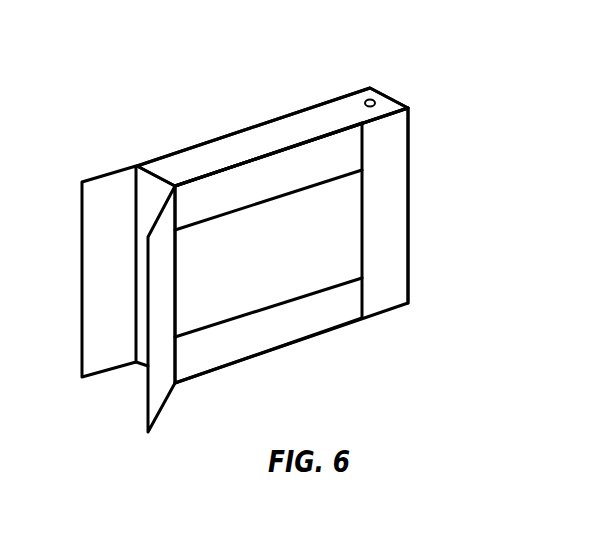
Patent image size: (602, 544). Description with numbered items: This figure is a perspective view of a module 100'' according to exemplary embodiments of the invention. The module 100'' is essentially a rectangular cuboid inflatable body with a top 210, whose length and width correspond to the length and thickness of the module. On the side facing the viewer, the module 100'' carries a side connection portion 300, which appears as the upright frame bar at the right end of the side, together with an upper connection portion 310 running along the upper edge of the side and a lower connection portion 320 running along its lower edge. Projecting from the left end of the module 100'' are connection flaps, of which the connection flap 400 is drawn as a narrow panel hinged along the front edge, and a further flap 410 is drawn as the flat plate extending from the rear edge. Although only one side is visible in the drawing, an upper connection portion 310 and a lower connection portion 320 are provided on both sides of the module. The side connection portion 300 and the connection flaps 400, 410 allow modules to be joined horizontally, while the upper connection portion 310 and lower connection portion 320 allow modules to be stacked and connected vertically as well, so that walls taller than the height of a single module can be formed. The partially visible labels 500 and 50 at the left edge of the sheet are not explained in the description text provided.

The module 100'' is at (272, 221).
The top 210 is at (177, 166).
The side connection portion 300 is at (385, 192).
The upper connection portion 310 is at (277, 170).
The lower connection portion 320 is at (253, 347).
The connection flap 400 is at (160, 377).
The side plate 410 is at (107, 330).
The adjacent element 500 is at (16, 196).
The adjacent element 50 is at (10, 75).